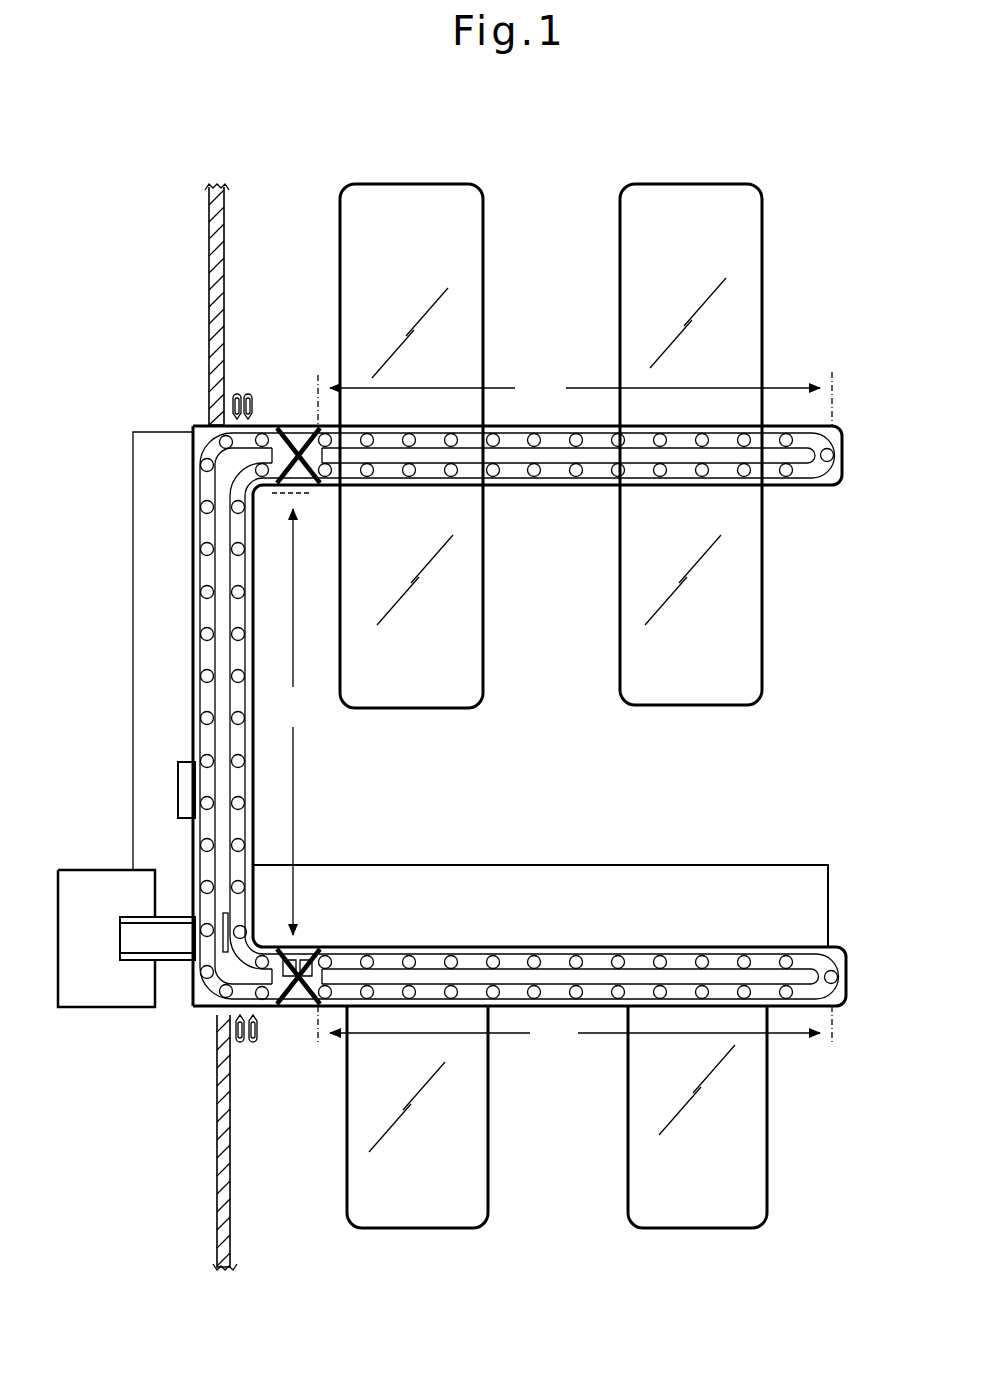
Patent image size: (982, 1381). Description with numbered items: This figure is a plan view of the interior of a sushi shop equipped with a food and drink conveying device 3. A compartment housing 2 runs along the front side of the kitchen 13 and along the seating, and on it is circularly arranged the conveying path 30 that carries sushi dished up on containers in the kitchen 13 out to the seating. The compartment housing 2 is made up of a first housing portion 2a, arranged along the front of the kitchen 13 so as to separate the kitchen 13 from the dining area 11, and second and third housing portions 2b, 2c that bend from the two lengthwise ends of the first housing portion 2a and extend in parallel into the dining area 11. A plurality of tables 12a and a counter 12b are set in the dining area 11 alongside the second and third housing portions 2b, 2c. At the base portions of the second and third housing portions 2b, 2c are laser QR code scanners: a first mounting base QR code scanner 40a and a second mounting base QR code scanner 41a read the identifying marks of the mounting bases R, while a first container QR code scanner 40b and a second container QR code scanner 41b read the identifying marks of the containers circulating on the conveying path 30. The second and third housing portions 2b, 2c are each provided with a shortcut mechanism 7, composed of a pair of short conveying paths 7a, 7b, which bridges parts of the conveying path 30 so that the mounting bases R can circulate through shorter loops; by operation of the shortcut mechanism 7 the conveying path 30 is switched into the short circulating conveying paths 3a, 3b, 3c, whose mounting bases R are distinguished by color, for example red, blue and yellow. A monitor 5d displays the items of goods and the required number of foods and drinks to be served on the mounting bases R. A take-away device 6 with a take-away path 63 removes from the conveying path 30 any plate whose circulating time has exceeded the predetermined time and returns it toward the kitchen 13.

The compartment housing 2 is at (175, 420).
The first housing portion 2a is at (192, 545).
The second housing portion 2b is at (843, 453).
The third housing portion 2c is at (845, 952).
The food and drink conveying device 3 is at (820, 424).
The short circulating conveying path 3a is at (292, 714).
The short circulating conveying path 3b is at (575, 398).
The short circulating conveying path 3c is at (575, 1029).
The conveying path 30 is at (800, 470).
The mounting base R is at (575, 474).
The shortcut mechanism 7 is at (300, 420).
The short conveying path 7a is at (290, 946).
The short conveying path 7b is at (320, 958).
The first mounting base QR code scanner 40a is at (237, 392).
The first container QR code scanner 40b is at (249, 392).
The second mounting base QR code scanner 41a is at (238, 1035).
The second container QR code scanner 41b is at (257, 1032).
The monitor 5d is at (178, 768).
The take-away device 6 is at (175, 965).
The take-away path 63 is at (150, 940).
The dining area 11 is at (575, 848).
The table 12a is at (402, 203).
The counter 12b is at (735, 868).
The kitchen 13 is at (122, 645).